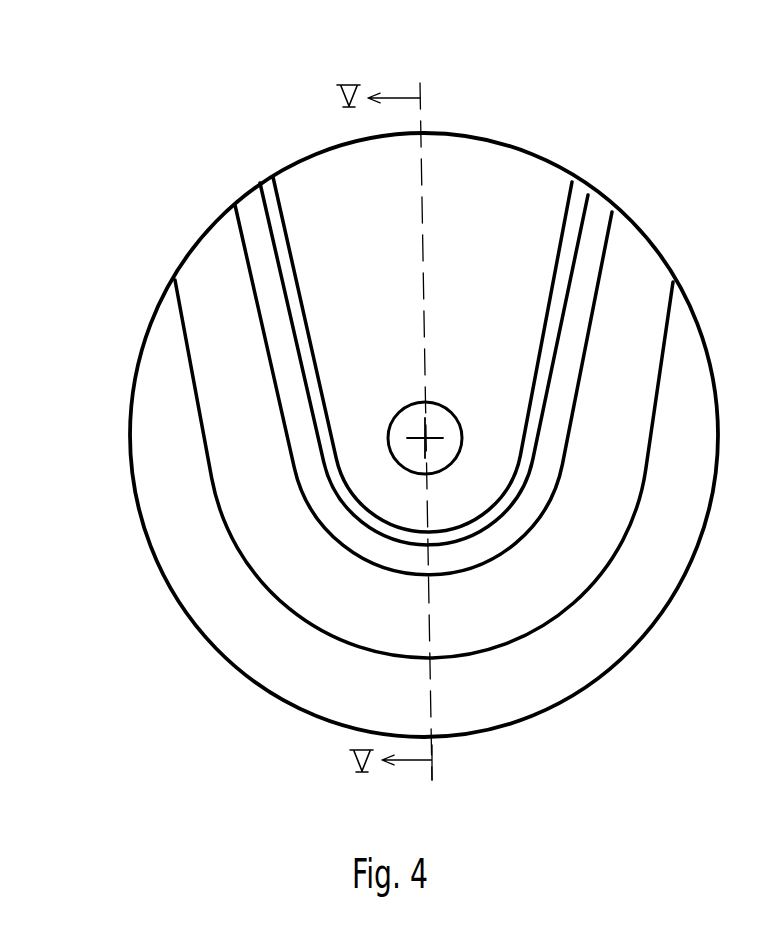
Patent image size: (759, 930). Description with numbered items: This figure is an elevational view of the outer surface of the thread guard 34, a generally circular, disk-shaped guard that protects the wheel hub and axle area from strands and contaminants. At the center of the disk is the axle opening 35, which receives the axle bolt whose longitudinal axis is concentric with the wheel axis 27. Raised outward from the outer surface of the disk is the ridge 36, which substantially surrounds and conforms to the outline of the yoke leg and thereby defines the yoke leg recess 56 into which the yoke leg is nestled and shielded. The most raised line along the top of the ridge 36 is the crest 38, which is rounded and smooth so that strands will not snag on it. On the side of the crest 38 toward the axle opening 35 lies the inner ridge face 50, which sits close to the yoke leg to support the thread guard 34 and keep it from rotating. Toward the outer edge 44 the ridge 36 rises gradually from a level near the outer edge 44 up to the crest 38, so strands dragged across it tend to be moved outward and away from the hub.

The wheel axis 27 is at (417, 438).
The thread guard 34 is at (175, 233).
The axle opening 35 is at (393, 458).
The ridge 36 is at (452, 459).
The crest 38 is at (603, 190).
The outer edge 44 is at (608, 672).
The inner ridge face 50 is at (278, 210).
The yoke leg recess 56 is at (537, 197).